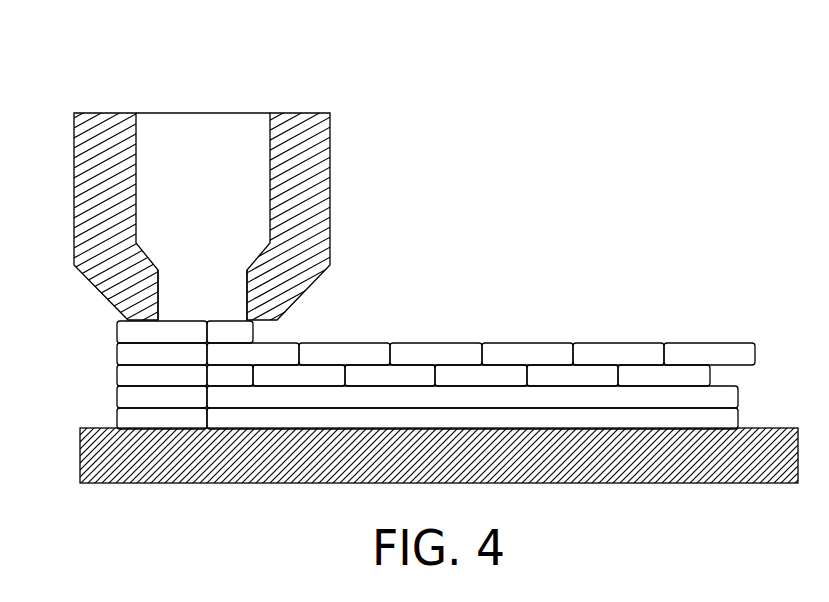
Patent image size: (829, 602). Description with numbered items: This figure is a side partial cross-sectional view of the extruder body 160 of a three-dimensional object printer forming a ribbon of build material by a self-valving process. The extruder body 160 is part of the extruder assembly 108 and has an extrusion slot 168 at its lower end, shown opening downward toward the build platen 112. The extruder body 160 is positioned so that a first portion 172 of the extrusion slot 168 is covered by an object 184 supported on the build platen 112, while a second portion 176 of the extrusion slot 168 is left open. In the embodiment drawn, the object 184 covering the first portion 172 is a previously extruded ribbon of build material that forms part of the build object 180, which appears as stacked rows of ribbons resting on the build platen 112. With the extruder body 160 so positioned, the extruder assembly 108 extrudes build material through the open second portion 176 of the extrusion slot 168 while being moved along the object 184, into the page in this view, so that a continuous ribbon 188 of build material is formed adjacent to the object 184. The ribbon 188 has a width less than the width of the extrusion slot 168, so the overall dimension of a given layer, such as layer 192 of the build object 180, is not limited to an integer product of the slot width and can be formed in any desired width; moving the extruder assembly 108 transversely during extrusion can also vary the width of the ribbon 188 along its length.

The extruder assembly 108 is at (271, 229).
The extruder body 160 is at (331, 148).
The extrusion slot 168 is at (207, 308).
The build object 180 is at (391, 350).
The object 184 is at (123, 330).
The continuous ribbon of build material 188 is at (240, 332).
The second portion of the extrusion slot 176 is at (223, 330).
The first portion of the extrusion slot 172 is at (182, 337).
The layer 192 is at (102, 333).
The build platen 112 is at (143, 475).